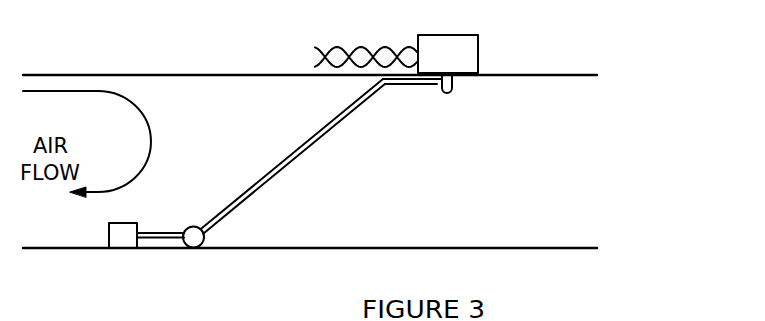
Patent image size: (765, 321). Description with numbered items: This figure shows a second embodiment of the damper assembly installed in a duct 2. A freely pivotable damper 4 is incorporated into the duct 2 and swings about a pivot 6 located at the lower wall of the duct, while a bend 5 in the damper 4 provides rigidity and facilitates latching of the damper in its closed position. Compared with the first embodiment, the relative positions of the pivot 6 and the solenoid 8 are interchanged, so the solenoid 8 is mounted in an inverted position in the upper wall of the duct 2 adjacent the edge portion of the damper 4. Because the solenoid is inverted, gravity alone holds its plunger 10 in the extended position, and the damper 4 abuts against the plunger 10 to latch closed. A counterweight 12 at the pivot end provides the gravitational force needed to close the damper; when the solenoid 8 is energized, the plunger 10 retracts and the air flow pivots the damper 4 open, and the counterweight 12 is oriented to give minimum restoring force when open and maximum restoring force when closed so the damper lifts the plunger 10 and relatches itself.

The duct 2 is at (358, 250).
The damper 4 is at (283, 170).
The bend 5 is at (387, 87).
The pivot point 6 is at (204, 237).
The solenoid 8 is at (479, 36).
The plunger 10 is at (454, 96).
The counterweight 12 is at (108, 246).